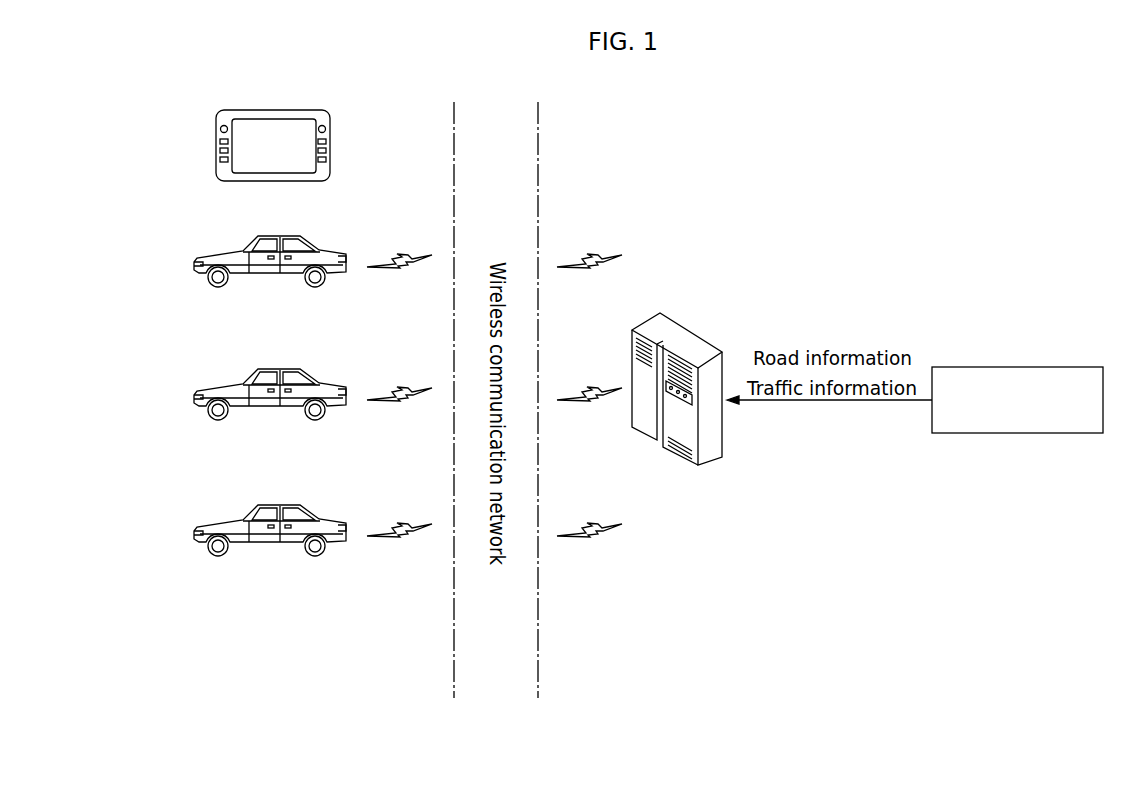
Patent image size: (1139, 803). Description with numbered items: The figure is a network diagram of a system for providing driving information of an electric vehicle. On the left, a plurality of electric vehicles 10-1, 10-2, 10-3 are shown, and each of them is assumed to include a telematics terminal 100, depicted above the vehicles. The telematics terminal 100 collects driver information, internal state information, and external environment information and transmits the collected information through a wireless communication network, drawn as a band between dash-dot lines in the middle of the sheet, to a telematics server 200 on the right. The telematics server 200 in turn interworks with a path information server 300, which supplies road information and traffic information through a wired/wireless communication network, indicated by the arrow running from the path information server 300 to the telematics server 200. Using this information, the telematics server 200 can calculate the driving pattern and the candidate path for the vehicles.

The telematics terminal 100 is at (277, 110).
The electric vehicle 10-1 is at (194, 268).
The electric vehicle 10-2 is at (194, 401).
The electric vehicle 10-3 is at (194, 537).
The telematics server 200 is at (679, 330).
The path information server 300 is at (1027, 367).